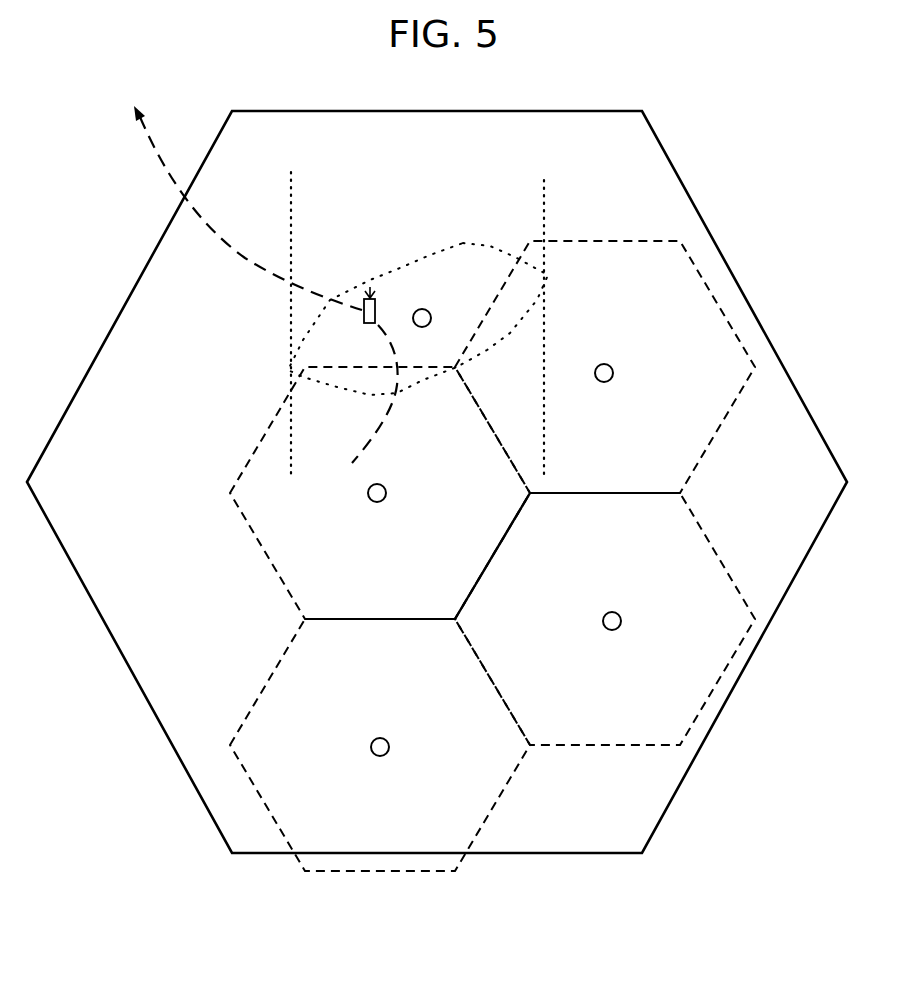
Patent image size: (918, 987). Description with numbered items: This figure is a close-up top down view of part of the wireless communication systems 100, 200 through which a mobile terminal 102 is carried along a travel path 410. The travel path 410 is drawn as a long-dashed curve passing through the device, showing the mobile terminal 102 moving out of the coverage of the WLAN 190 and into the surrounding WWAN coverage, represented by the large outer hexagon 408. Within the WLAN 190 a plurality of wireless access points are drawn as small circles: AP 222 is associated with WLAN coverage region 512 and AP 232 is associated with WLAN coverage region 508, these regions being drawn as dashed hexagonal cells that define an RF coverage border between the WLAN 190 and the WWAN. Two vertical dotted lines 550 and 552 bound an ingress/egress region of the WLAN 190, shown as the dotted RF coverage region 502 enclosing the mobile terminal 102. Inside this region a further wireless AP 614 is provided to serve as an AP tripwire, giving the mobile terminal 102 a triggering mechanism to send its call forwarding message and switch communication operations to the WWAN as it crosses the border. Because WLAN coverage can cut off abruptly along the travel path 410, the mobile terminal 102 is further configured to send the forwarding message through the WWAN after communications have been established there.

The wireless communication system 100 is at (430, 920).
The wireless communication system 200 is at (427, 946).
The mobile terminal 102 is at (363, 315).
The WLAN 190 is at (689, 213).
The AP 222 is at (596, 379).
The AP 232 is at (368, 498).
The coverage area / tracking area 408 is at (683, 178).
The travel path 410 is at (230, 253).
The RF coverage region 502 is at (485, 252).
The WLAN coverage region 508 is at (260, 447).
The WLAN coverage region 512 is at (700, 273).
The dashed line 550 is at (295, 182).
The dashed line 552 is at (546, 184).
The wireless AP 614 is at (422, 309).